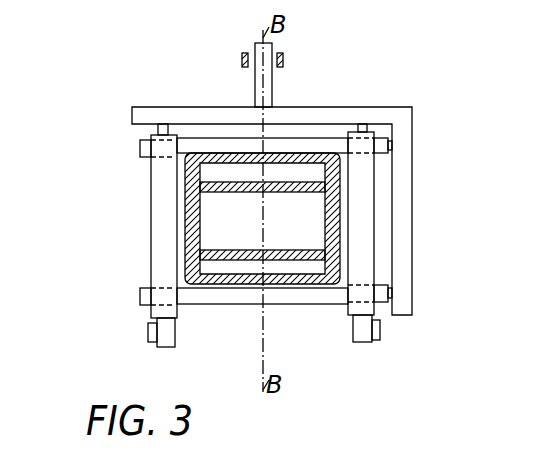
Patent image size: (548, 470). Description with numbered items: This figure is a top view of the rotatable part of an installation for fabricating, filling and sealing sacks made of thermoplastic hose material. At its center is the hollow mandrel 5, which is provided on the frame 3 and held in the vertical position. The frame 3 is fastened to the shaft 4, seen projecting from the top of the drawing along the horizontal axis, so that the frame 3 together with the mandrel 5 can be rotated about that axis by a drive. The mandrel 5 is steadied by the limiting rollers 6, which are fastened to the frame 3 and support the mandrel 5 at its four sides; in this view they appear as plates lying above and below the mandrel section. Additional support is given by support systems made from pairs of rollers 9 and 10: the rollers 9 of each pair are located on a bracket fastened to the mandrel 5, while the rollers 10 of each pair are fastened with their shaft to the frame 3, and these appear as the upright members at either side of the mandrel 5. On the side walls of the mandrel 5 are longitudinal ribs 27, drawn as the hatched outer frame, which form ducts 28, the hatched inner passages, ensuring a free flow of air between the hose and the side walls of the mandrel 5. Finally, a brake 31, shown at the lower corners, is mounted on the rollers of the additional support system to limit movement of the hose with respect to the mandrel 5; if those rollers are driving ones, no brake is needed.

The frame 3 is at (132, 119).
The shaft 4 is at (255, 56).
The hollow mandrel 5 is at (237, 211).
The limiting rollers 6 is at (230, 147).
The rollers 9 is at (178, 222).
The rollers 10 is at (160, 265).
The longitudinal ribs 27 is at (302, 157).
The ducts 28 is at (279, 172).
The brake 31 is at (148, 332).